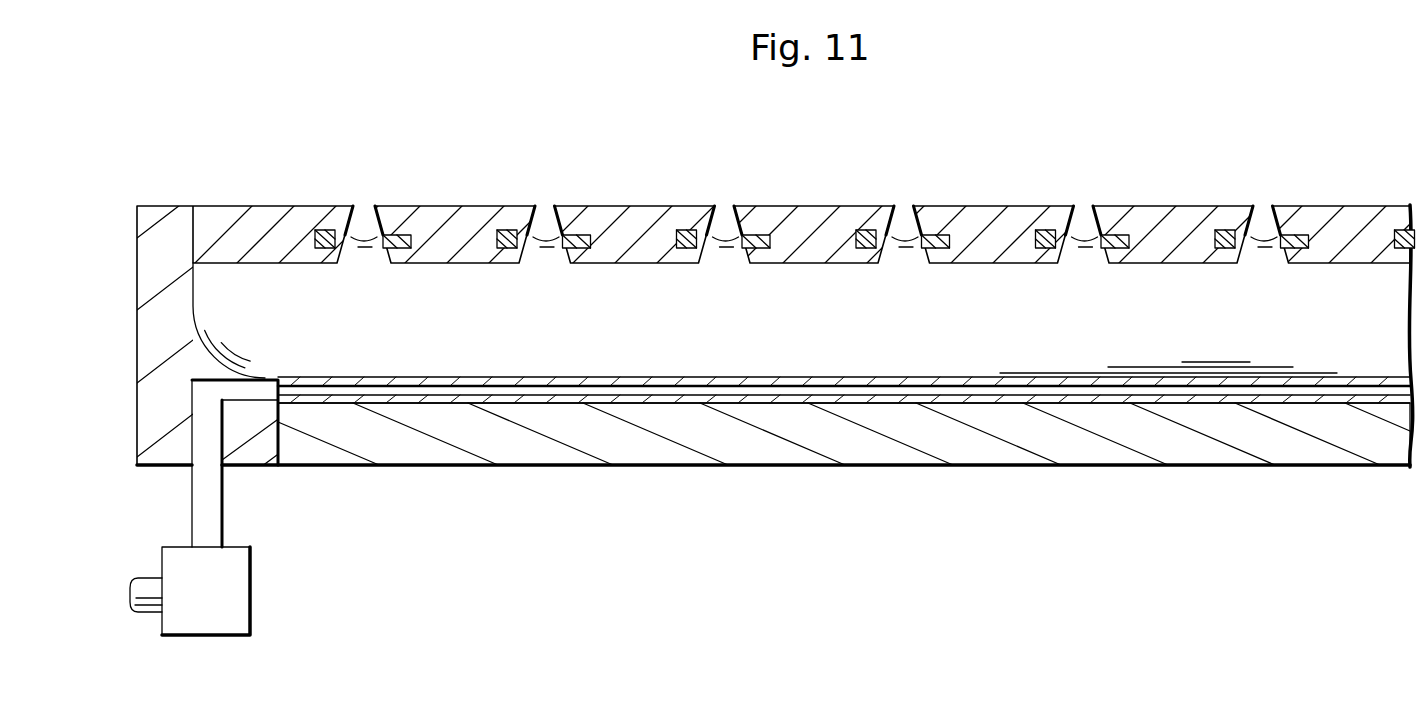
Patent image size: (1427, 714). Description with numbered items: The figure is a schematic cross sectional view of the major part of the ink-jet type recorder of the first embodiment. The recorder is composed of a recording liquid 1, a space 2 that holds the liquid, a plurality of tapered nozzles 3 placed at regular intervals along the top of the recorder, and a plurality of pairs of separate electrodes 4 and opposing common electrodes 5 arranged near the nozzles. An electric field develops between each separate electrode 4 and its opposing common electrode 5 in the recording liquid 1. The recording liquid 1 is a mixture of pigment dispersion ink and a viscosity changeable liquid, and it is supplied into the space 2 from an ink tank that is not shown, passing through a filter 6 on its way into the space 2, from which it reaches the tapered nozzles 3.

The recording liquid 1 is at (771, 337).
The space 2 is at (711, 490).
The tapered nozzles 3 is at (817, 193).
The separate electrodes 4 is at (863, 194).
The common electrodes 5 is at (857, 194).
The filter 6 is at (250, 581).